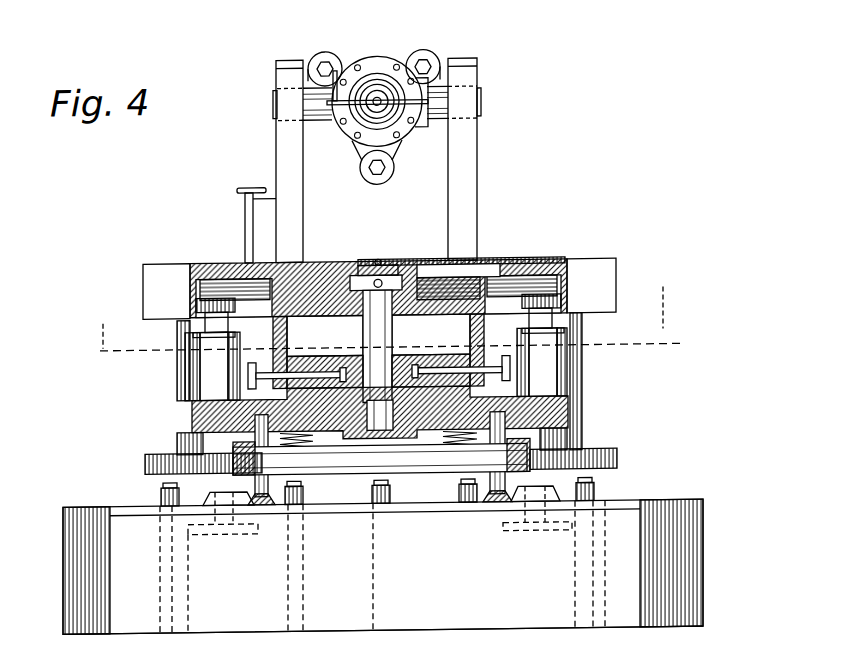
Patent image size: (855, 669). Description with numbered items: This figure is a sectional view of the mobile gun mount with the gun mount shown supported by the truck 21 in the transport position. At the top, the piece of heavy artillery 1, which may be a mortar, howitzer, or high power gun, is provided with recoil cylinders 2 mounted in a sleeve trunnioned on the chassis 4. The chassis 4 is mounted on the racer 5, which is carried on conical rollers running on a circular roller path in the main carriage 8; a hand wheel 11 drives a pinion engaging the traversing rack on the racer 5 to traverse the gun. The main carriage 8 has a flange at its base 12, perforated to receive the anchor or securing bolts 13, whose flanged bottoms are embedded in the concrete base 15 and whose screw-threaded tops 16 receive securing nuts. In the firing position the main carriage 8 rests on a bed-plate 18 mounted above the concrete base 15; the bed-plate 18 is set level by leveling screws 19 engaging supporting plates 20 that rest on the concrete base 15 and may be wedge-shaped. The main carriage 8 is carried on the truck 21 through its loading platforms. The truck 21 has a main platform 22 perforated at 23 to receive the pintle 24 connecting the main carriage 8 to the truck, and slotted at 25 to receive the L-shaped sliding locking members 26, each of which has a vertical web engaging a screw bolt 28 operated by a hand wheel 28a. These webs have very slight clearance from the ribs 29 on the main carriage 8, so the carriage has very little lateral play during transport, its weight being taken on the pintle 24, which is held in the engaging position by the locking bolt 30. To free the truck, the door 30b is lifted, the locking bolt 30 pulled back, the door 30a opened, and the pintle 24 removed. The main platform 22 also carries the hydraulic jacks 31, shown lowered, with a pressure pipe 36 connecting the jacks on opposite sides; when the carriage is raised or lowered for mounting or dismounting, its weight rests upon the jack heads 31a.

The piece of heavy artillery 1 is at (412, 138).
The recoil cylinders 2 is at (345, 60).
The chassis 4 is at (478, 78).
The racer 5 is at (382, 324).
The main carriage 8 is at (145, 268).
The hand wheel 11 is at (240, 189).
The base 12 is at (150, 462).
The anchor or securing bolts 13 is at (375, 598).
The concrete base 15 is at (63, 580).
The screw-threaded tops 16 is at (161, 493).
The bed-plate 18 is at (700, 503).
The leveling screws 19 is at (205, 494).
The supporting plates 20 is at (240, 534).
The truck 21 is at (258, 503).
The main platform 22 is at (196, 414).
The perforation 23 is at (372, 388).
The pintle 24 is at (278, 341).
The slot 25 is at (333, 400).
The L-shaped sliding locking members 26 is at (296, 360).
The screw bolt 28 is at (312, 380).
The hand wheel 28a is at (248, 375).
The ribs 29 is at (486, 302).
The locking bolts 30 is at (404, 275).
The door 30a is at (378, 259).
The door 30b is at (462, 259).
The hydraulic jacks 31 is at (196, 372).
The jack heads 31a is at (208, 300).
The pressure pipe 36 is at (582, 411).